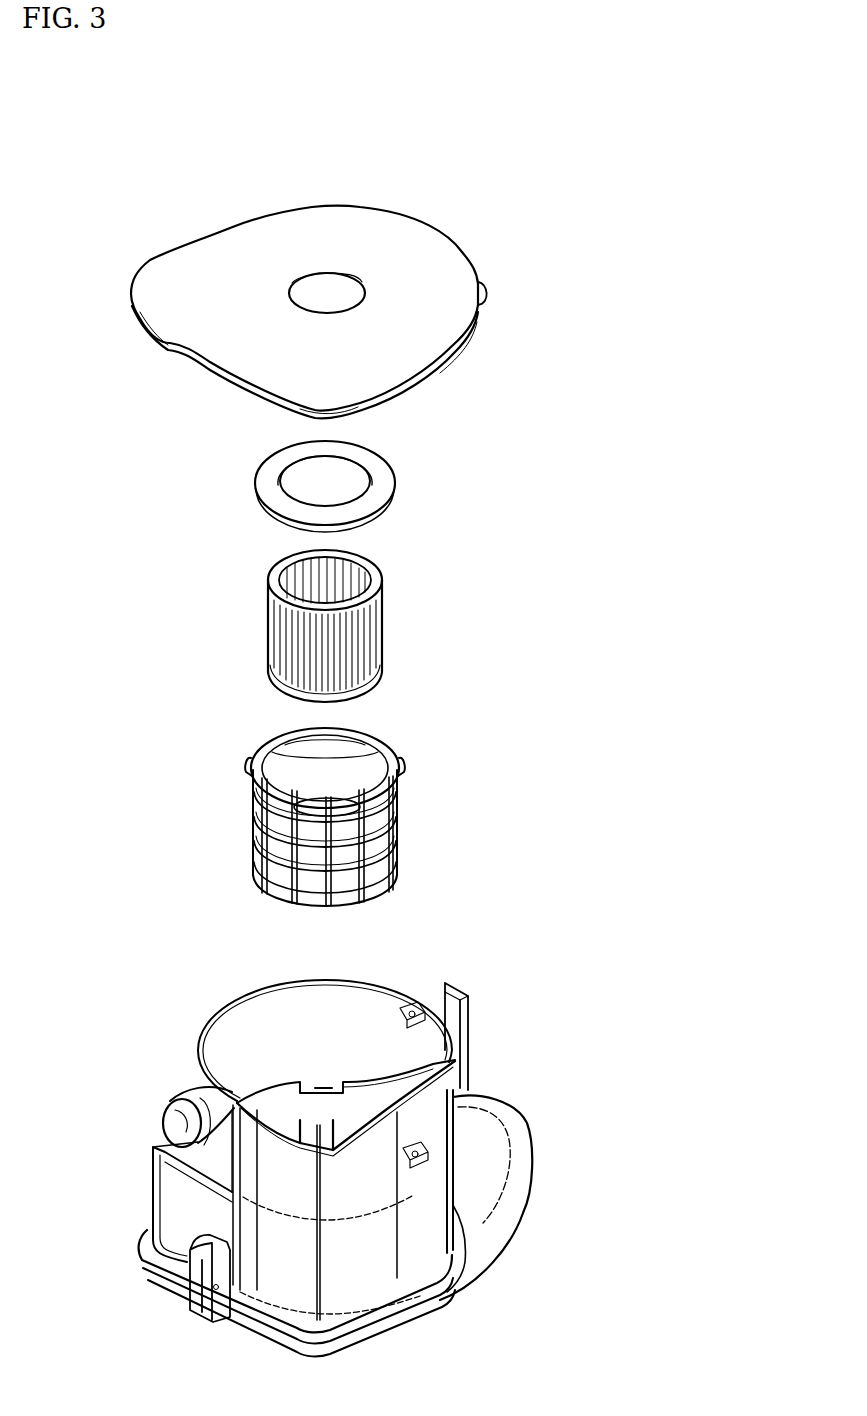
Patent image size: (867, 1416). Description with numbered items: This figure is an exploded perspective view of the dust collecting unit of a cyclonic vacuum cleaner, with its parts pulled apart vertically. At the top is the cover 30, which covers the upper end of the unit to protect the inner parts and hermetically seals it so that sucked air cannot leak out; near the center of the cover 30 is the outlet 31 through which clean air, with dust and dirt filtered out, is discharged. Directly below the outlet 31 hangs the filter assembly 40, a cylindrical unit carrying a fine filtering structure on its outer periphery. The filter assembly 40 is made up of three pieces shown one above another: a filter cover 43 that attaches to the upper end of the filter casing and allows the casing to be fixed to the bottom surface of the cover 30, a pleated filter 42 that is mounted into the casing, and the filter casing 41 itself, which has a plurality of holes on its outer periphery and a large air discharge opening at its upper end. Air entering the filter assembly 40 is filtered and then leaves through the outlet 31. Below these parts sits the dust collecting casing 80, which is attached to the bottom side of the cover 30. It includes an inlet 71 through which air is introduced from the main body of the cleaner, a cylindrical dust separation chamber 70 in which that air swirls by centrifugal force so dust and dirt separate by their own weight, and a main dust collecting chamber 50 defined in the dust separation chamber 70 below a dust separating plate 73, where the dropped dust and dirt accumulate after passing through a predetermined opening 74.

The cover 30 is at (178, 278).
The outlet 31 is at (345, 297).
The filter assembly 40 is at (510, 482).
The filter casing 41 is at (393, 826).
The pleated filter 42 is at (372, 635).
The filter cover 43 is at (378, 490).
The main dust collecting chamber 50 is at (370, 1264).
The dust separation chamber 70 is at (296, 1052).
The inlet 71 is at (176, 1128).
The dust separating plate 73 is at (380, 1086).
The opening 74 is at (323, 1088).
The dust collecting casing 80 is at (246, 990).